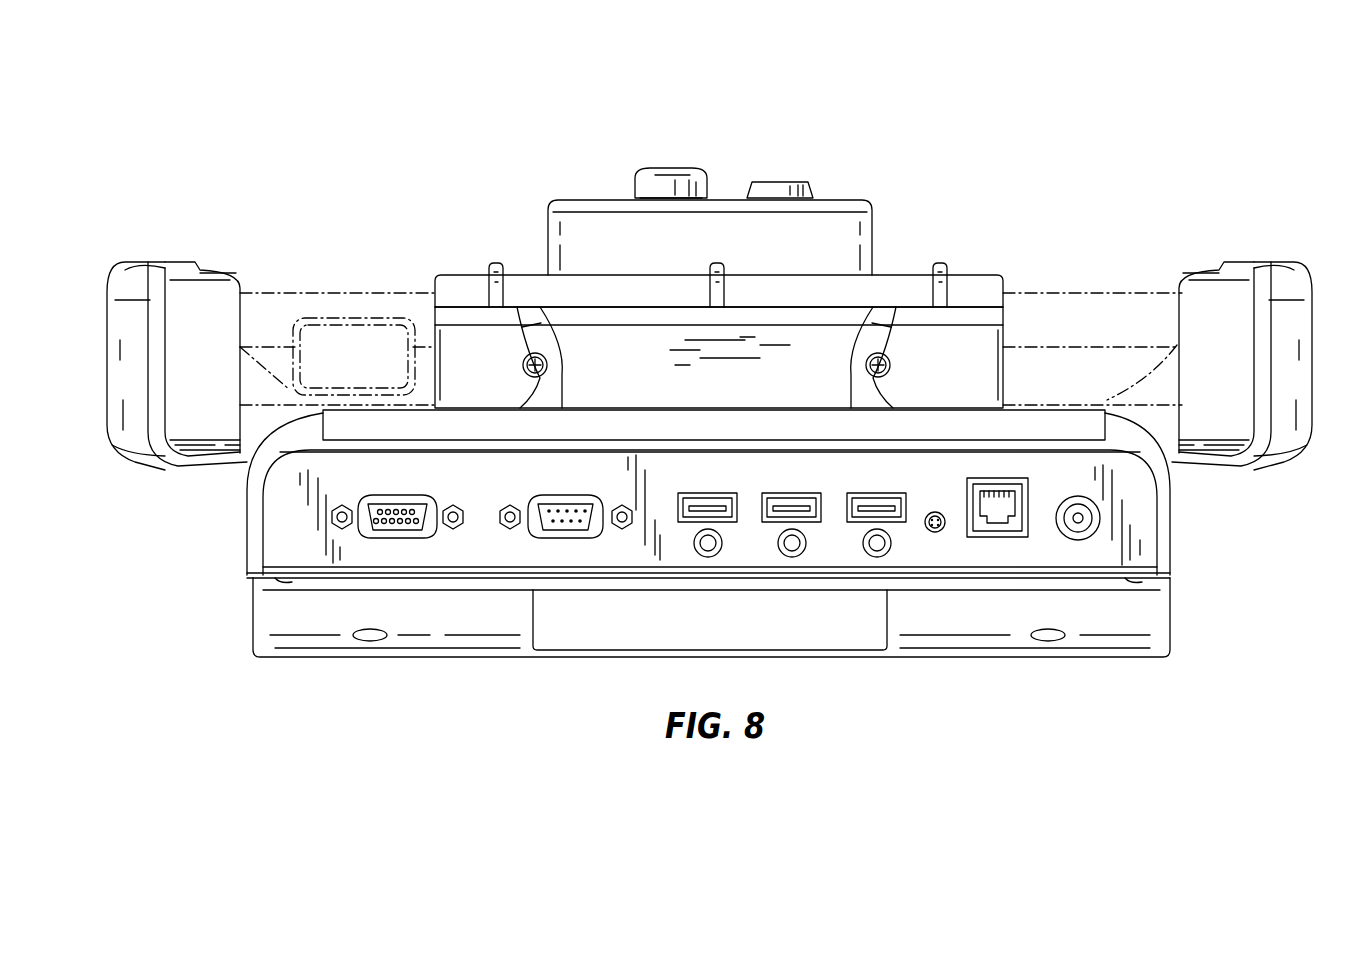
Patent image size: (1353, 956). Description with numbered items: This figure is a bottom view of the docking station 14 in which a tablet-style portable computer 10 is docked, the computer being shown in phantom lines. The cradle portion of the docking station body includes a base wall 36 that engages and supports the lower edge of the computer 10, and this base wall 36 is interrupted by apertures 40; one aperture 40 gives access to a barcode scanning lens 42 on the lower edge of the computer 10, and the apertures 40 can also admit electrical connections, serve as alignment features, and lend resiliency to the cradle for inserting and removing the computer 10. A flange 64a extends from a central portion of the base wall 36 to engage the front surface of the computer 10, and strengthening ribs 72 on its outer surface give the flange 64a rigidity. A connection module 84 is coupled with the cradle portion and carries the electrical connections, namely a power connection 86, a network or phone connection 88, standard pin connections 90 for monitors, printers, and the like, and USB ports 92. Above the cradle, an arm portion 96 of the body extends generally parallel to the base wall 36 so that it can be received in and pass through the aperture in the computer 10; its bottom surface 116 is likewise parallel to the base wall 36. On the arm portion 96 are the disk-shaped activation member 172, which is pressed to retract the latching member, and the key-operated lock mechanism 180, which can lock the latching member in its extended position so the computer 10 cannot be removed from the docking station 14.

The portable computer 10 is at (285, 290).
The docking station 14 is at (950, 680).
The base wall 36 is at (1192, 275).
The apertures 40 is at (238, 315).
The barcode scanning lens 42 is at (357, 350).
The flange 64a is at (525, 288).
The strengthening ribs 72 is at (940, 262).
The connection module 84 is at (1143, 510).
The power connection 86 is at (1078, 525).
The network or phone connection 88 is at (990, 530).
The standard pin connections 90 is at (397, 538).
The USB ports 92 is at (708, 523).
The arm portion 96 is at (865, 237).
The bottom surface 116 is at (688, 255).
The activation member 172 is at (663, 168).
The lock mechanism 180 is at (777, 182).